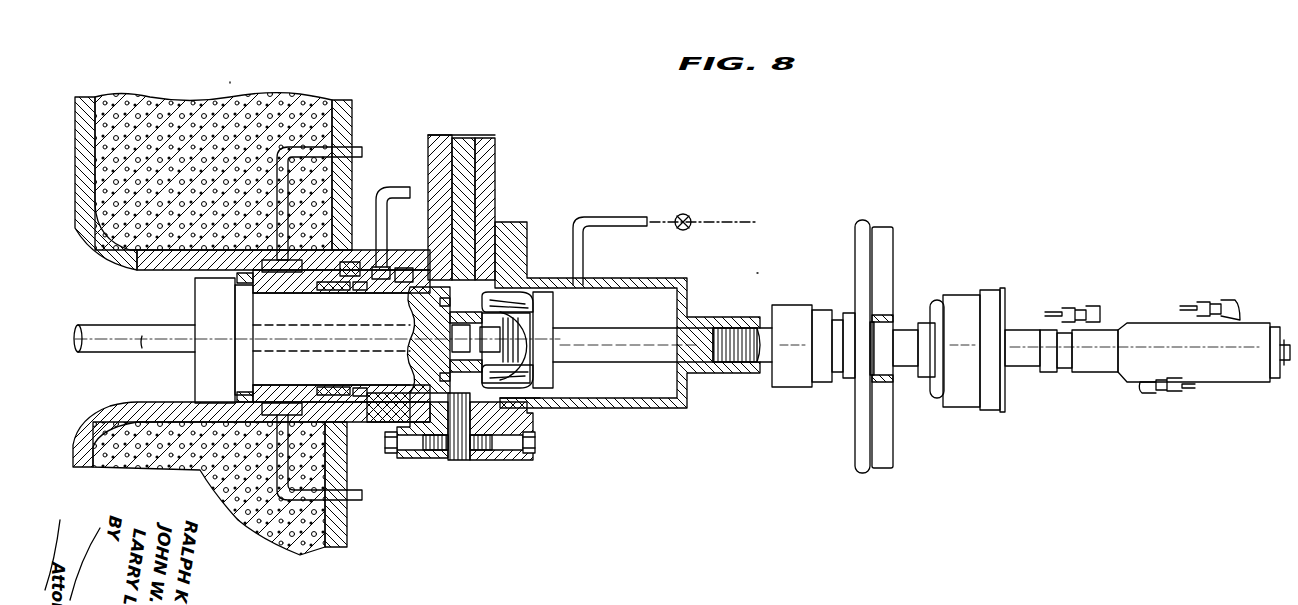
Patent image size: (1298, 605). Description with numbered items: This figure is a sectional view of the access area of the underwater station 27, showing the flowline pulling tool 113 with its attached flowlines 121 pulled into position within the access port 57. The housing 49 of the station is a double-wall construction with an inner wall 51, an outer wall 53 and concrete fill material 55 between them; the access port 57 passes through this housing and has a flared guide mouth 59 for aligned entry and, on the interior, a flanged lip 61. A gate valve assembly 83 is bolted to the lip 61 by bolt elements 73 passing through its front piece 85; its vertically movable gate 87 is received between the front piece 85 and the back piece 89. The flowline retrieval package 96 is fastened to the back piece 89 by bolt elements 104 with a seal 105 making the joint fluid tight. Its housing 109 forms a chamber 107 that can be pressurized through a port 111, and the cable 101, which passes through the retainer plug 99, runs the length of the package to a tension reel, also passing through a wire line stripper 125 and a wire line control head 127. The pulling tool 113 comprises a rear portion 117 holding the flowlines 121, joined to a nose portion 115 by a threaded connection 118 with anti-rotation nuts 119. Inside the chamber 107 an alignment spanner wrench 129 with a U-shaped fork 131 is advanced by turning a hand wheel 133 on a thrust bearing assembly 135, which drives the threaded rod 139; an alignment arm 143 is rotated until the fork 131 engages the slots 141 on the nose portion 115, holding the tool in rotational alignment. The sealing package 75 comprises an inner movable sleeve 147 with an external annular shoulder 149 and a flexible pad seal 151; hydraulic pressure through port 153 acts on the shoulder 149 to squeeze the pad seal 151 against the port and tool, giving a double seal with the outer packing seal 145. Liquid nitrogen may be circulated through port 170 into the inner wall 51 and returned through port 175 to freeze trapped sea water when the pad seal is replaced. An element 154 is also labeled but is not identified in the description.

The underwater station 27 is at (634, 168).
The housing 49 is at (232, 80).
The inner shell or wall 51 is at (346, 100).
The outer shell or wall 53 is at (85, 97).
The concrete fill material 55 is at (185, 98).
The access port 57 is at (140, 402).
The flared guide mouth 59 is at (110, 265).
The flanged lip or extension 61 is at (415, 460).
The bolt elements 73 is at (386, 452).
The sealing package 75 is at (370, 403).
The gate valve assembly 83 is at (493, 130).
The front piece 85 is at (432, 135).
The movable gate element 87 is at (466, 136).
The back piece 89 is at (490, 146).
The flowline retrieval package 96 is at (757, 272).
The retainer plug 99 is at (515, 372).
The cable 101 is at (548, 335).
The bolt elements 104 is at (515, 462).
The seal 105 is at (490, 462).
The chamber 107 is at (634, 308).
The housing 109 is at (540, 280).
The port 111 is at (630, 222).
The flowline pulling tool 113 is at (195, 295).
The nose portion 115 is at (460, 296).
The rear portion 117 is at (346, 314).
The threaded connection 118 is at (430, 370).
The anti-rotation nuts 119 is at (455, 305).
The flowlines 121 is at (100, 348).
The wire line stripper 125 is at (968, 296).
The wire line control head 127 is at (1140, 322).
The alignment spanner wrench 129 is at (553, 376).
The U-shaped fork element 131 is at (505, 296).
The hand wheel 133 is at (862, 228).
The thrust bearing assembly 135 is at (808, 290).
The threaded rod 139 is at (606, 356).
The slots 141 is at (512, 292).
The alignment arm 143 is at (895, 227).
The outer packing seal 145 is at (245, 395).
The inner movable sleeve member 147 is at (348, 262).
The external annular shoulder element 149 is at (362, 393).
The pad seal 151 is at (330, 386).
The port 153 is at (400, 186).
The bushing 154 is at (410, 268).
The port 170 is at (362, 150).
The port 175 is at (362, 520).